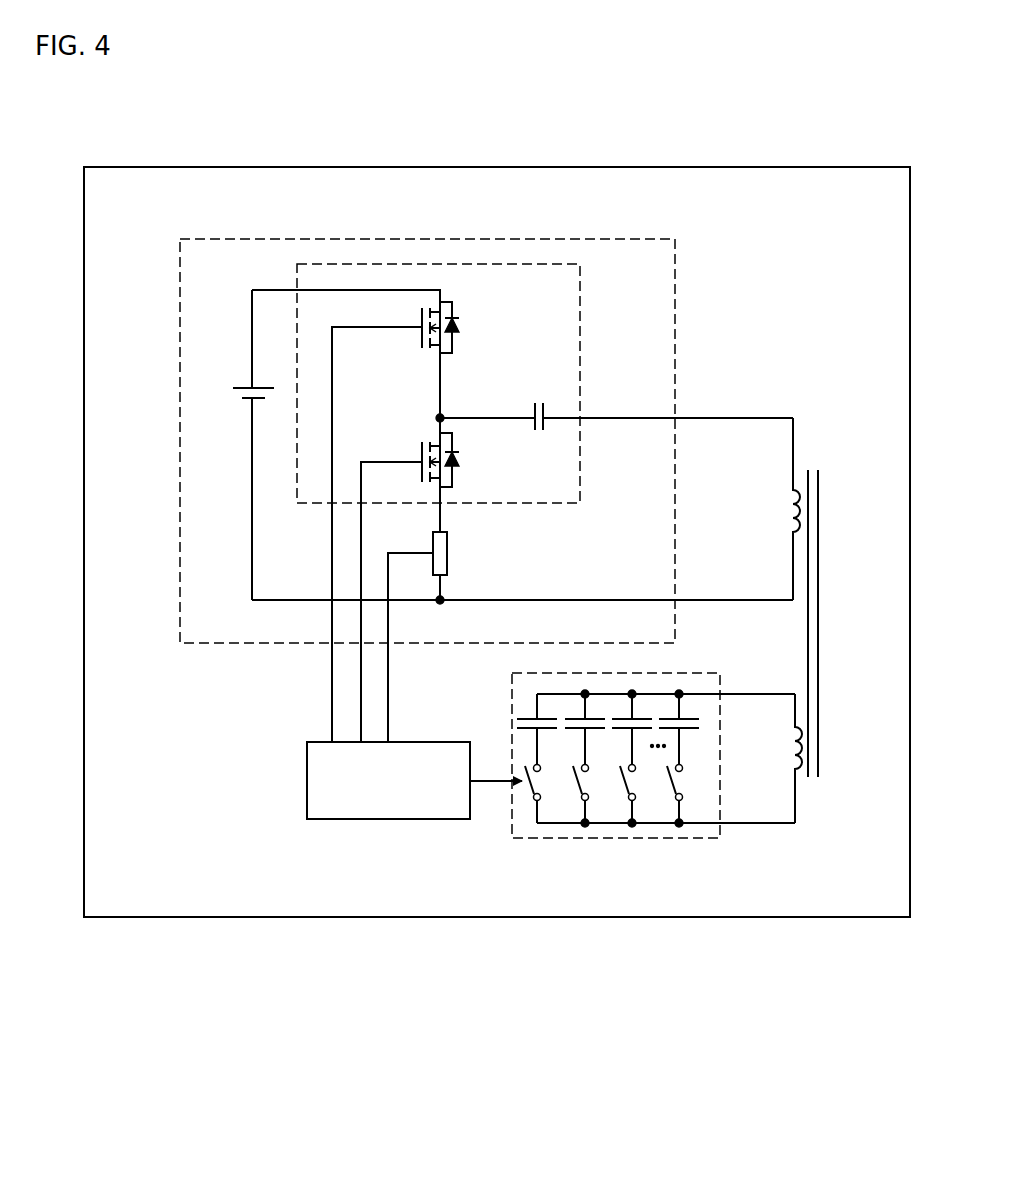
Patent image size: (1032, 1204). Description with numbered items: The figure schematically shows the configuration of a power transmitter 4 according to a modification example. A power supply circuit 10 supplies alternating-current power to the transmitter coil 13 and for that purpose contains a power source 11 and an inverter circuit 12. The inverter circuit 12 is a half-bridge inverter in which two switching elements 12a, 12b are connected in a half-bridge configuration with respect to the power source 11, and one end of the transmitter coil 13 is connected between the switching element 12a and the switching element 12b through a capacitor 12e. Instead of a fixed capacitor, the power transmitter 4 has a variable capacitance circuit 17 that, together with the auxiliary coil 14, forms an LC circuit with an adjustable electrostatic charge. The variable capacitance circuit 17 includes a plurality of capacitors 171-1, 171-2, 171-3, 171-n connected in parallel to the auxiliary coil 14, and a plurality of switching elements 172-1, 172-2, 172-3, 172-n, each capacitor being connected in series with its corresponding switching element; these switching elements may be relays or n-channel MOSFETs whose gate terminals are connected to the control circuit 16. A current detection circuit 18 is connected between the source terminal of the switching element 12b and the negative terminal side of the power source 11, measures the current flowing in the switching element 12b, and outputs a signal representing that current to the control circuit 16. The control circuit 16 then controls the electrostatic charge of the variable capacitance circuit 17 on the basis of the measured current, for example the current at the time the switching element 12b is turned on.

The power transmitter 4 is at (840, 952).
The power supply circuit 10 is at (282, 643).
The power source 11 is at (243, 382).
The inverter circuit 12 is at (515, 265).
The switching element 12a is at (413, 300).
The switching element 12b is at (422, 445).
The capacitor 12e is at (535, 408).
The transmitter coil 13 is at (796, 475).
The auxiliary coil 14 is at (800, 777).
The control circuit 16 is at (307, 790).
The variable capacitance circuit 17 is at (603, 805).
The current detection circuit 18 is at (447, 545).
The capacitor 171-1 is at (530, 717).
The capacitor 171-2 is at (570, 713).
The capacitor 171-3 is at (622, 713).
The capacitor 171-n is at (690, 712).
The switching element 172-1 is at (530, 794).
The switching element 172-2 is at (578, 800).
The switching element 172-3 is at (625, 800).
The switching element 172-n is at (672, 800).